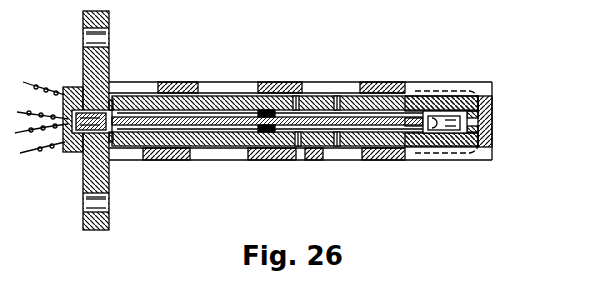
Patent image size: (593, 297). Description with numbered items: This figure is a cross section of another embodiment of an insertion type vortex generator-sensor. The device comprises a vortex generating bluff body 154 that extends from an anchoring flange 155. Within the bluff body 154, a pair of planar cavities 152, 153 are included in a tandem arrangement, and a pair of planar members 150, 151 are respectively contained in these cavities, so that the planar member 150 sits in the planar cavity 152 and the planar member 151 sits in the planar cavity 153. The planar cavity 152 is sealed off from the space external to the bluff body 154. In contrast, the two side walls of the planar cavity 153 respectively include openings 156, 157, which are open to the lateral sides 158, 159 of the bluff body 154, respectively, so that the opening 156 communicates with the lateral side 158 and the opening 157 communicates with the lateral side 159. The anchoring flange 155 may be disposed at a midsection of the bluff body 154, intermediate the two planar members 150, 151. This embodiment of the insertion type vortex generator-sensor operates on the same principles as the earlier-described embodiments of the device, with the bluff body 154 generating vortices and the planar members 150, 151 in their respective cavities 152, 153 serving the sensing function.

The planar member 150 is at (227, 122).
The planar member 151 is at (403, 90).
The planar cavity 152 is at (217, 105).
The planar cavity 153 is at (319, 143).
The vortex generating bluff body 154 is at (272, 92).
The anchoring flange 155 is at (110, 180).
The opening 156 is at (346, 96).
The opening 157 is at (336, 148).
The lateral side 158 is at (321, 93).
The lateral side 159 is at (312, 150).